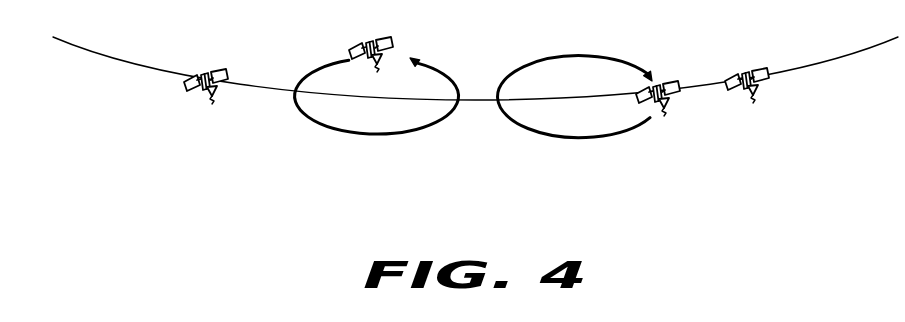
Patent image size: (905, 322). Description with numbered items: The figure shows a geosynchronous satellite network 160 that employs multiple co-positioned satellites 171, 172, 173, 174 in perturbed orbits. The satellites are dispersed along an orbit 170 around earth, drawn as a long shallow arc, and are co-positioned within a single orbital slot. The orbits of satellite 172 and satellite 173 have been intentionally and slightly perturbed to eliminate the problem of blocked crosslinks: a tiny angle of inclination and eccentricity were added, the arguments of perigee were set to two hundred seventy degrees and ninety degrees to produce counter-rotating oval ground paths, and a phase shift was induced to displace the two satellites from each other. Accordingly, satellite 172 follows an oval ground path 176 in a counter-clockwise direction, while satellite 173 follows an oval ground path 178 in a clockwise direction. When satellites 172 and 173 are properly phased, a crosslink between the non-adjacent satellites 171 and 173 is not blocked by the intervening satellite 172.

The geosynchronous satellite network 160 is at (292, 255).
The orbit 170 is at (117, 65).
The satellite 171 is at (192, 93).
The satellite 172 is at (384, 42).
The satellite 173 is at (677, 97).
The satellite 174 is at (765, 87).
The ground path 176 is at (365, 138).
The ground path 178 is at (577, 58).